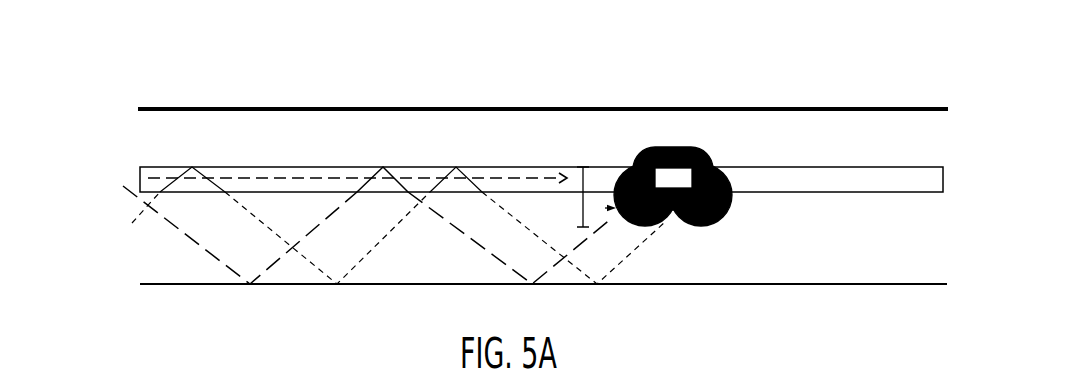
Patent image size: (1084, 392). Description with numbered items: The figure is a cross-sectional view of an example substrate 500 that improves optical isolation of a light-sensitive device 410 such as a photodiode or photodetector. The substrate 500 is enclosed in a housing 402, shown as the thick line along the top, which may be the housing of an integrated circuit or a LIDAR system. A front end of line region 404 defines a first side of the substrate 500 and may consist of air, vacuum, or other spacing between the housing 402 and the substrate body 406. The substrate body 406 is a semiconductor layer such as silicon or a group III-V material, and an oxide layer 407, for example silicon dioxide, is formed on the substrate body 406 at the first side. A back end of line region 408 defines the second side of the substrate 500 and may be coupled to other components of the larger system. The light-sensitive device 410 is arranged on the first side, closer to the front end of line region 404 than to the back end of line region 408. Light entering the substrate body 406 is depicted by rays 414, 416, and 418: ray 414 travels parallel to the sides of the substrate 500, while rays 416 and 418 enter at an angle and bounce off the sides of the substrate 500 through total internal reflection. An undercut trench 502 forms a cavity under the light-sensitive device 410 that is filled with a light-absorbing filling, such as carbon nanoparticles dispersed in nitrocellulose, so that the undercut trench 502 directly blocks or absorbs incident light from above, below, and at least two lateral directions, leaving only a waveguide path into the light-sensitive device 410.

The substrate 500 is at (105, 77).
The housing 402 is at (207, 107).
The front end of line region 404 is at (142, 138).
The substrate body 406 is at (115, 217).
The oxide layer 407 is at (139, 178).
The back end of line region 408 is at (137, 300).
The light-sensitive device 410 is at (676, 174).
The ray 414 is at (280, 184).
The ray 416 is at (386, 243).
The ray 418 is at (181, 242).
The undercut trench 502 is at (732, 222).